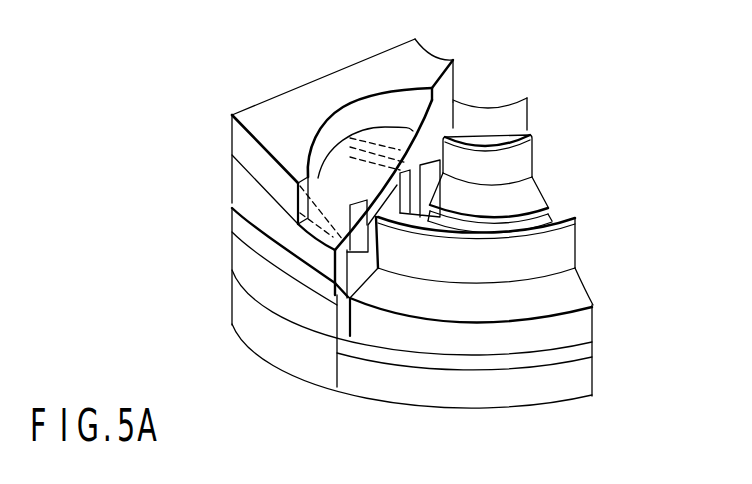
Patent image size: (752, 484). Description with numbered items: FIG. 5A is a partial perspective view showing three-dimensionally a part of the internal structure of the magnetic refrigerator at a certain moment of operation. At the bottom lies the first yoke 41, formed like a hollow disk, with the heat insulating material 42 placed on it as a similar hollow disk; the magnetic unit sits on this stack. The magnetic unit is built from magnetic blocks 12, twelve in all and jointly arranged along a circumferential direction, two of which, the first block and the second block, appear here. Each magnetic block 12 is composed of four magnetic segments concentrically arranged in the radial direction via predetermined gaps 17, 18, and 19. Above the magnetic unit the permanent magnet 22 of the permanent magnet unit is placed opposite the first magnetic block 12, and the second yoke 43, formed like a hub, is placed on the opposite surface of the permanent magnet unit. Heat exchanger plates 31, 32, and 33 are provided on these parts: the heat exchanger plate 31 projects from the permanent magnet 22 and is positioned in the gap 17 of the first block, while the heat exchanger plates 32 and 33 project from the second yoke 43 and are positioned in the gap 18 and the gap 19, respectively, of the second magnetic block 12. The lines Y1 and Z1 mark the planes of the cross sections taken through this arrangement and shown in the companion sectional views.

The magnetic block 12 is at (298, 305).
The gap 17 is at (413, 140).
The gap 18 is at (393, 135).
The gap 19 is at (327, 230).
The permanent magnet 22 is at (232, 180).
The heat exchanger plate 31 is at (363, 143).
The heat exchanger plate 32 is at (527, 147).
The heat exchanger plate 33 is at (567, 248).
The first yoke 41 is at (588, 380).
The heat insulating material 42 is at (587, 347).
The second yoke 43 is at (275, 108).
The section line Y1- Y1 is at (447, 37).
The section line Z1- Z1 is at (530, 432).